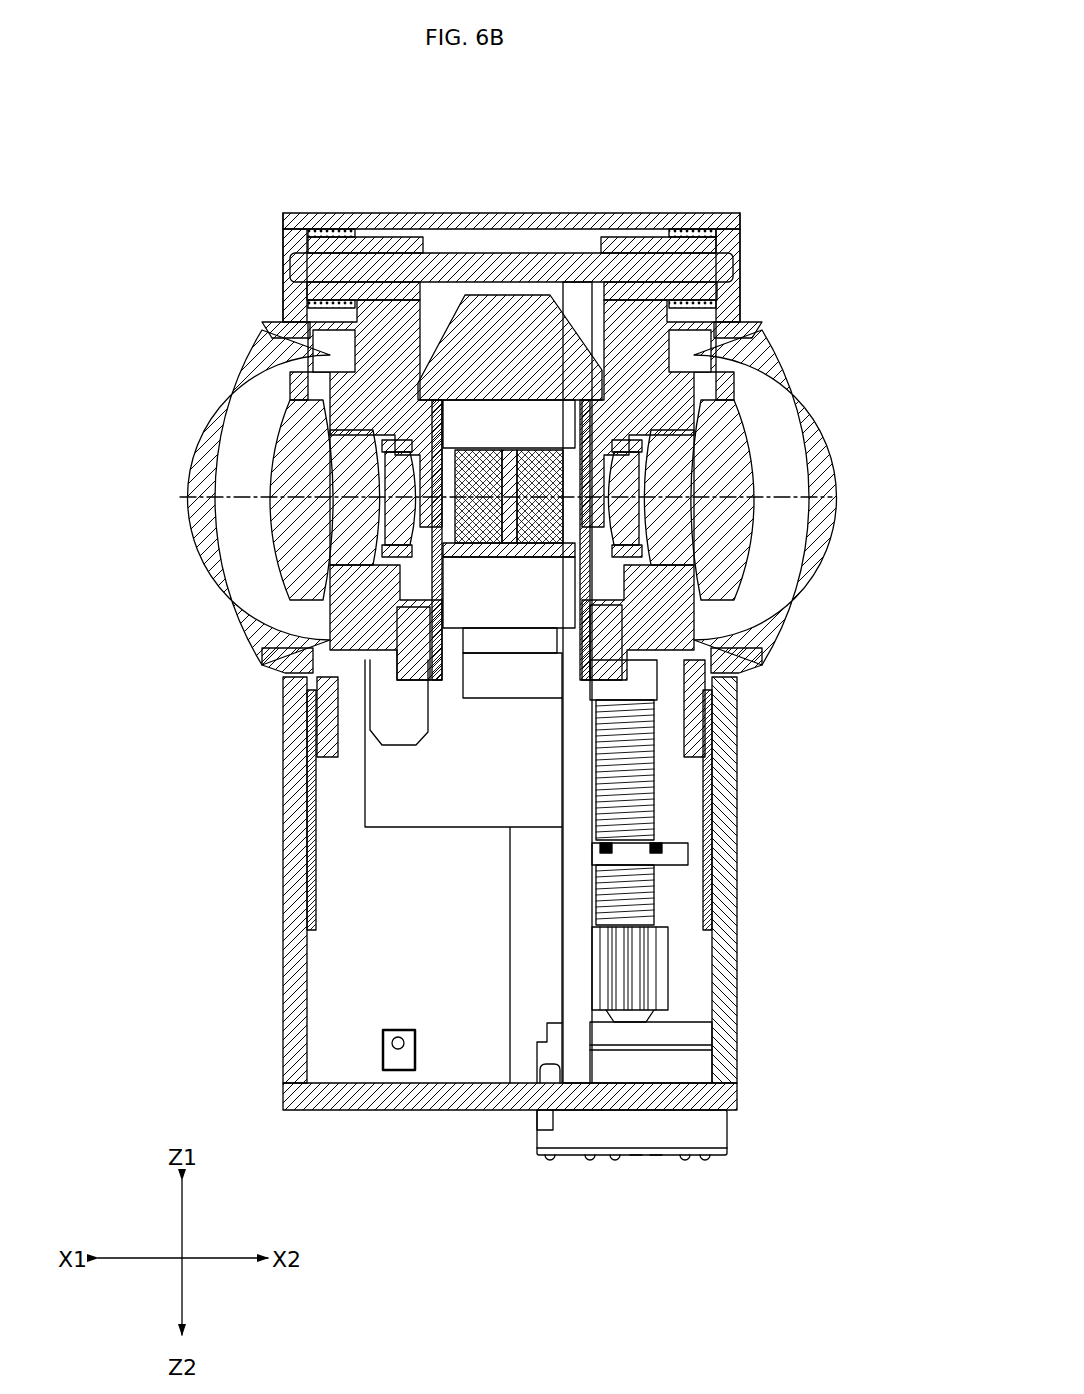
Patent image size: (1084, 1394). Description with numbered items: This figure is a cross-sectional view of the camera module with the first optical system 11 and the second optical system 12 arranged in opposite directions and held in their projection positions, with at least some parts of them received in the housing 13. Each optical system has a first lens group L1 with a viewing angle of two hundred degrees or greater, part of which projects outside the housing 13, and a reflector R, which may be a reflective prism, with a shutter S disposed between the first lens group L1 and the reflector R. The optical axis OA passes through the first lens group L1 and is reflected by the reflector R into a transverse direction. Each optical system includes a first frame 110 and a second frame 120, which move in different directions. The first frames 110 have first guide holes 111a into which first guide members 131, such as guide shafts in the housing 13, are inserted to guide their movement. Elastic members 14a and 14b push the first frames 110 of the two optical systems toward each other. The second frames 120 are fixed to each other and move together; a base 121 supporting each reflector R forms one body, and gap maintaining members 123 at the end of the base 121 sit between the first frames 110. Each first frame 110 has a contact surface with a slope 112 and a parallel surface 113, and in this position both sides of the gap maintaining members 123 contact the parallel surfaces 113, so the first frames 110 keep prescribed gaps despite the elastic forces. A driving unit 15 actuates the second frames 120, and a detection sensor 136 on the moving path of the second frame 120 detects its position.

The housing 13 is at (725, 242).
The first guide member 131 is at (538, 268).
The elastic member 14a is at (333, 233).
The first guide hole 111a is at (380, 245).
The parallel surface 113 is at (420, 298).
The first frame 110 is at (375, 346).
The gap maintaining member 123 is at (495, 330).
The slope 112 is at (420, 606).
The base 121 is at (512, 560).
The second frame 120 is at (400, 578).
The first optical system 11 is at (472, 497).
The second optical system 12 is at (798, 378).
The first lens group L1 is at (222, 563).
The reflector R is at (400, 463).
The optical axis OA is at (820, 497).
The shutter S is at (295, 678).
The elastic member 14b is at (312, 851).
The driving unit 15 is at (735, 1128).
The detection sensor 136 is at (397, 1062).